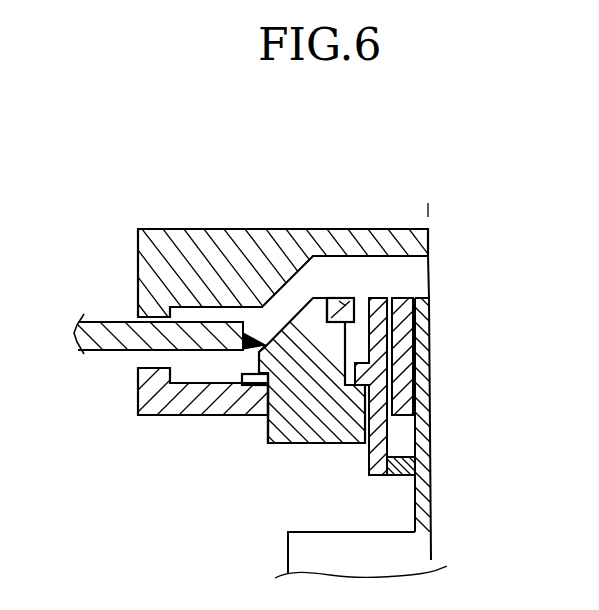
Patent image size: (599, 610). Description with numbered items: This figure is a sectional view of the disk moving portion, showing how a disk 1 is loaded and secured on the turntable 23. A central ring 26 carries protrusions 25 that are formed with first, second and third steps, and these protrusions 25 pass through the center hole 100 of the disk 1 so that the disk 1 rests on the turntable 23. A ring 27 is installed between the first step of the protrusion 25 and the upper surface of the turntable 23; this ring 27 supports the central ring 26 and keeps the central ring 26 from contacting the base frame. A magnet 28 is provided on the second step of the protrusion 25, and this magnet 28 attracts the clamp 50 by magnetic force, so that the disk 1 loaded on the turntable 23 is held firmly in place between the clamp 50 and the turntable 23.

The disk 1 is at (73, 333).
The turntable 23 is at (133, 385).
The protrusion 25 is at (265, 344).
The central ring 26 is at (270, 430).
The ring 27 is at (225, 415).
The magnet 28 is at (327, 298).
The clamp 50 is at (428, 229).
The center hole 100 is at (325, 444).